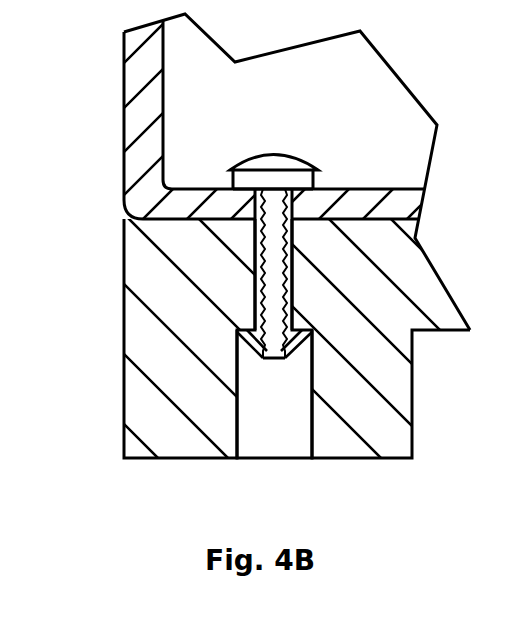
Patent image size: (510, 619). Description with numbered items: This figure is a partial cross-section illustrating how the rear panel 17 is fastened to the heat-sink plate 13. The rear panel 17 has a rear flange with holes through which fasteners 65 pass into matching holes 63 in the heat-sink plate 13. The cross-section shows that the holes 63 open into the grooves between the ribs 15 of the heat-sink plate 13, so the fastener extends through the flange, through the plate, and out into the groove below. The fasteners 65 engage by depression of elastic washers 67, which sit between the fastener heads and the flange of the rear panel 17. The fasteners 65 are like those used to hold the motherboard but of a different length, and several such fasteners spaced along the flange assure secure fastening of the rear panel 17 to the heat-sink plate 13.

The heat-sink plate 13 is at (95, 330).
The ribs 15 is at (336, 460).
The rear panel 17 is at (124, 143).
The holes 63 is at (290, 272).
The fasteners 65 is at (268, 155).
The elastic washers 67 is at (233, 180).